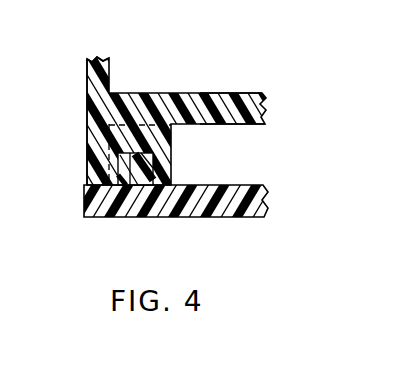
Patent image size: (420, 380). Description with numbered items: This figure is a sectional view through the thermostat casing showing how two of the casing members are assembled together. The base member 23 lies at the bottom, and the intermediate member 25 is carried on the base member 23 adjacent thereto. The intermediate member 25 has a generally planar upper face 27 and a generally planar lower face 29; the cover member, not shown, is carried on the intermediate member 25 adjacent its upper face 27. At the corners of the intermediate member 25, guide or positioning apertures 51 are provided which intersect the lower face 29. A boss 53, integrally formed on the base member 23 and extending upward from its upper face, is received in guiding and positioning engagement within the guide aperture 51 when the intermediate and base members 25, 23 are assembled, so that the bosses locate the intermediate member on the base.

The base member 23 is at (265, 202).
The intermediate member 25 is at (265, 104).
The upper face 27 is at (248, 93).
The lower face 29 is at (259, 125).
The guide aperture 51 is at (112, 154).
The boss 53 is at (153, 166).